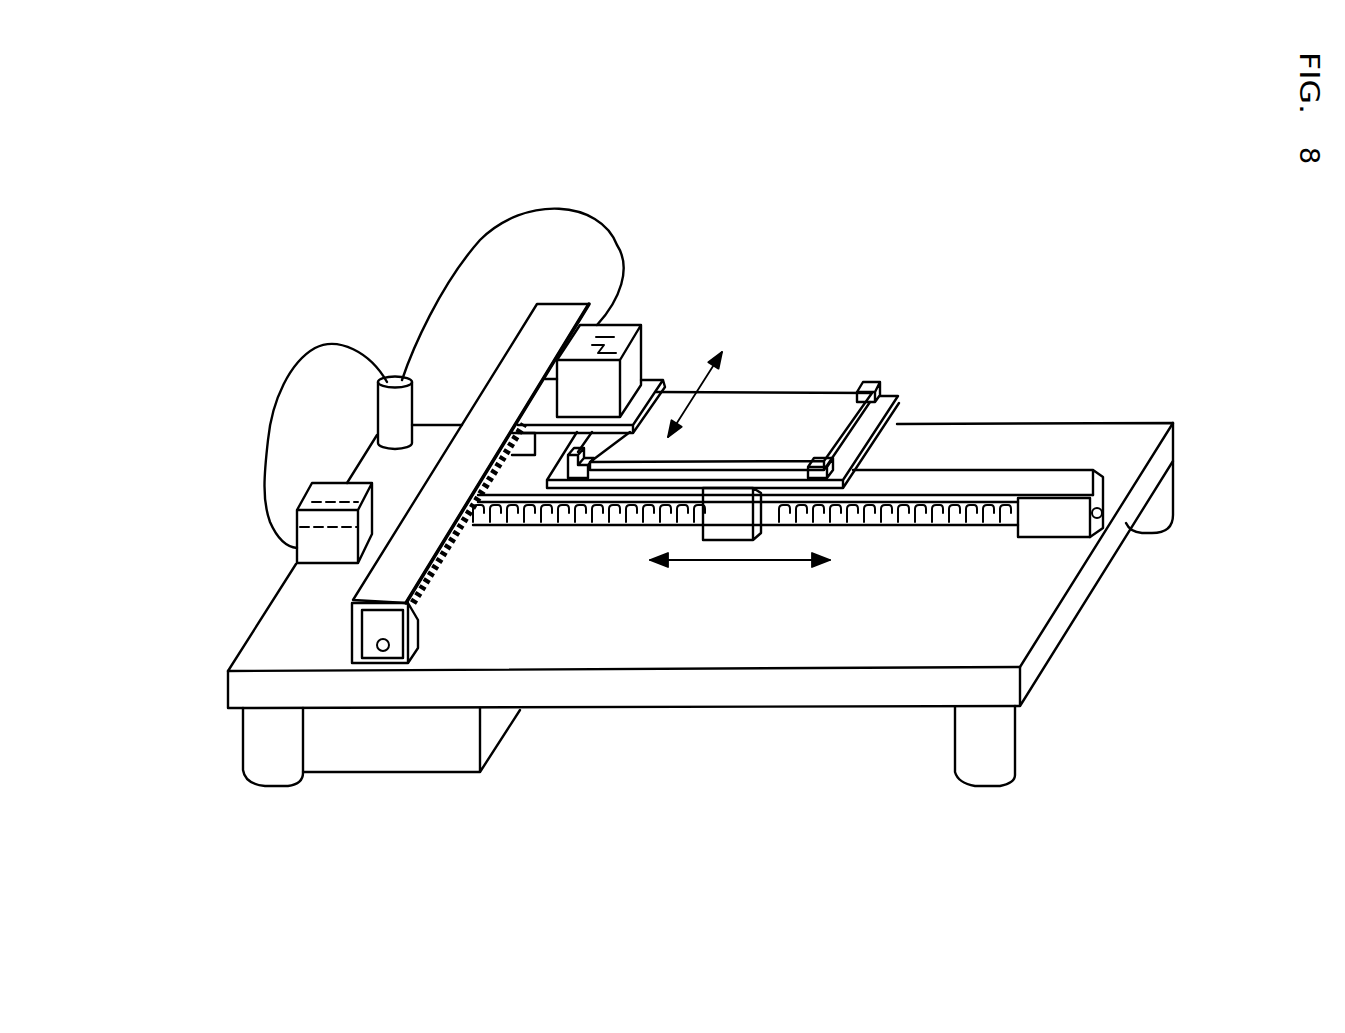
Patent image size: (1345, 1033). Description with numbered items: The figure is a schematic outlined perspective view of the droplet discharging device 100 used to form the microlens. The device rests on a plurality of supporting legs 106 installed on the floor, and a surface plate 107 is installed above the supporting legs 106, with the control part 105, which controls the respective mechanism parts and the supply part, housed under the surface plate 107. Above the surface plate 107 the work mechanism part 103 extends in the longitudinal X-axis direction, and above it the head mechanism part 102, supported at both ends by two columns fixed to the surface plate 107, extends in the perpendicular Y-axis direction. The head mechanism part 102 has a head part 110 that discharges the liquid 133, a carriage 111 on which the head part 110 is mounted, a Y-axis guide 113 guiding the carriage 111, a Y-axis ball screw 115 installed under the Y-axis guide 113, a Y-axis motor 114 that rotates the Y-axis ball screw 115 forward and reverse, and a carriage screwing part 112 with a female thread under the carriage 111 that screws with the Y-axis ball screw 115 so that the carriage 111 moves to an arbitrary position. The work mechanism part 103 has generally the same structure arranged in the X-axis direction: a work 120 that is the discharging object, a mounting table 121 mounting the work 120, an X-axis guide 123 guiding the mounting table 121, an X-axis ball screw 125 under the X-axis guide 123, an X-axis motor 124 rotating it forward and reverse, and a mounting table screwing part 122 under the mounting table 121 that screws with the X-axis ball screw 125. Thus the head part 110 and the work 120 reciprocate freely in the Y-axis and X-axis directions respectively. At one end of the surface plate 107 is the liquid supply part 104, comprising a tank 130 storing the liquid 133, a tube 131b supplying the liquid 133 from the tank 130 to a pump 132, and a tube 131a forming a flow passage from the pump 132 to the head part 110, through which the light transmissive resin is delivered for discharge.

The droplet discharging device 100 is at (910, 238).
The head mechanism part 102 is at (326, 612).
The work mechanism part 103 is at (967, 455).
The liquid supply part 104 is at (318, 258).
The control part 105 is at (500, 727).
The supporting legs 106 is at (1162, 508).
The surface plate 107 is at (887, 645).
The head part 110 is at (643, 326).
The carriage 111 is at (657, 392).
The carriage screwing part 112 is at (522, 448).
The Y-axis guide 113 is at (392, 578).
The Y-axis motor 114 is at (397, 652).
The Y-axis ball screw 115 is at (447, 560).
The work 120 is at (795, 402).
The mounting table 121 is at (893, 390).
The mounting table screwing part 122 is at (715, 518).
The X-axis guide 123 is at (1073, 478).
The X-axis motor 124 is at (1047, 527).
The X-axis ball screw 125 is at (887, 527).
The tank 130 is at (312, 560).
The tube 131a is at (443, 267).
The tube 131b is at (302, 367).
The pump 132 is at (413, 395).
The liquid 133 is at (330, 545).